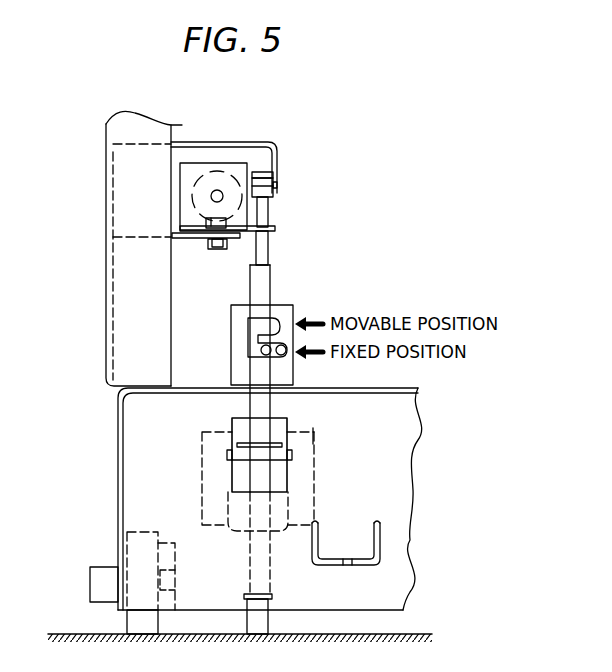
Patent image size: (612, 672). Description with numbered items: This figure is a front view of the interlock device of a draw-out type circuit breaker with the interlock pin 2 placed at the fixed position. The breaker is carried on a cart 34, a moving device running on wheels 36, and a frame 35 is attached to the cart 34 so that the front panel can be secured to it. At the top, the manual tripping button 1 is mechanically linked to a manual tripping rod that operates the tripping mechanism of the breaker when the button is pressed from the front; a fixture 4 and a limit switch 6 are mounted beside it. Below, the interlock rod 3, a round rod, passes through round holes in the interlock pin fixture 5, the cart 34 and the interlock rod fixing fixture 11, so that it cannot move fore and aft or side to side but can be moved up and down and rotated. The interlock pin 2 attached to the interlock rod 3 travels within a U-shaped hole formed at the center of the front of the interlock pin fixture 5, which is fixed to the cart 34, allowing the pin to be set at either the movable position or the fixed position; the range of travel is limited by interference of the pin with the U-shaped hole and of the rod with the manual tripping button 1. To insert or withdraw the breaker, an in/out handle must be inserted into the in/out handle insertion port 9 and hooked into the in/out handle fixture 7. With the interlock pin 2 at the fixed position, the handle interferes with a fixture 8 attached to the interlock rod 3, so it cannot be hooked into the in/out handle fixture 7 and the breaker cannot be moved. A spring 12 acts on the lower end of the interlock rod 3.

The manual tripping button 1 is at (216, 182).
The interlock pin 2 is at (262, 350).
The interlock rod 3 is at (265, 279).
The fixture 4 is at (186, 239).
The interlock pin fixture 5 is at (282, 313).
The limit switch 6 is at (276, 186).
The in/out handle fixture 7 is at (238, 457).
The fixture 8 is at (287, 441).
The in/out handle insertion port 9 is at (240, 434).
The interlock rod fixing fixture 11 is at (308, 490).
The spring 12 is at (270, 575).
The cart 34 is at (135, 440).
The frame 35 is at (121, 303).
The wheel 36 is at (133, 627).